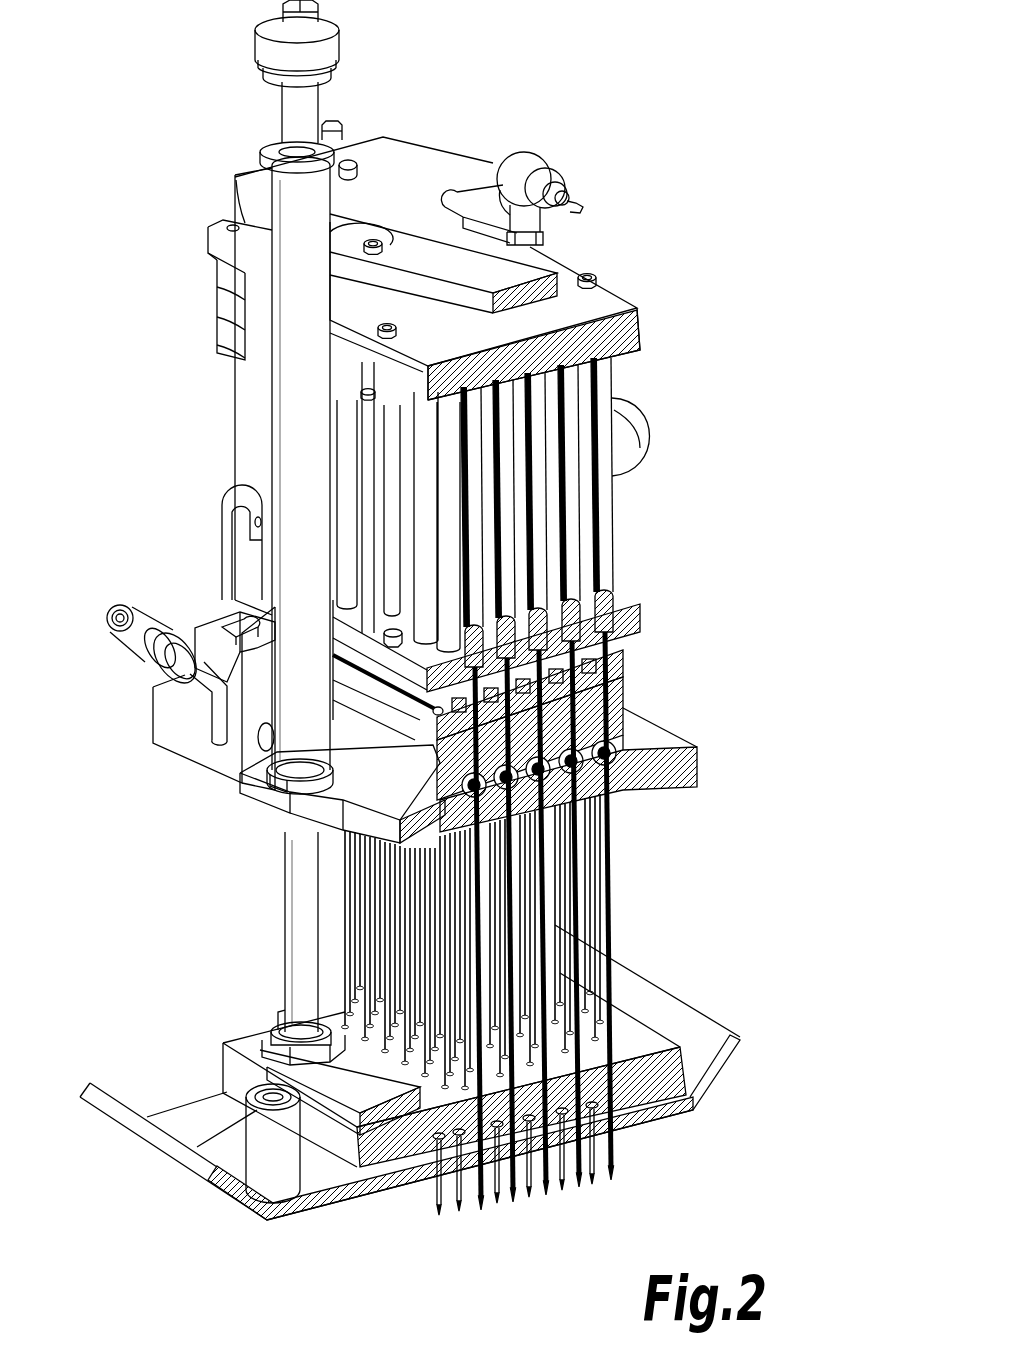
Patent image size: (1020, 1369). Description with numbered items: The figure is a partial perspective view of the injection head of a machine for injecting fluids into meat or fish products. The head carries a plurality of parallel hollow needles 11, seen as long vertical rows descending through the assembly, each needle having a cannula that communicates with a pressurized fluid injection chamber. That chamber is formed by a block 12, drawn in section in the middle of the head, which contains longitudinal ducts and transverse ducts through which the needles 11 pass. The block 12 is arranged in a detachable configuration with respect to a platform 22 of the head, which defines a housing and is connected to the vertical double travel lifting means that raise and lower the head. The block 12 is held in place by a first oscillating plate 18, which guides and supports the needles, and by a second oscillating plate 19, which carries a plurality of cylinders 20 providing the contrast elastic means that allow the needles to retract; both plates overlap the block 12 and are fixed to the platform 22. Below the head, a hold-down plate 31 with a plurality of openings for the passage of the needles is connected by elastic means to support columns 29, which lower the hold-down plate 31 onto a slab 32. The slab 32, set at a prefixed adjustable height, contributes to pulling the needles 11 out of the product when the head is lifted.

The cylinders 20 is at (603, 543).
The second oscillating plate 19 is at (630, 670).
The block 12 is at (632, 710).
The platform 22 is at (679, 773).
The hollow needles 11 is at (611, 895).
The first oscillating plate 18 is at (413, 737).
The support columns 29 is at (313, 917).
The hold-down plate 31 is at (653, 1033).
The slab 32 is at (713, 1082).